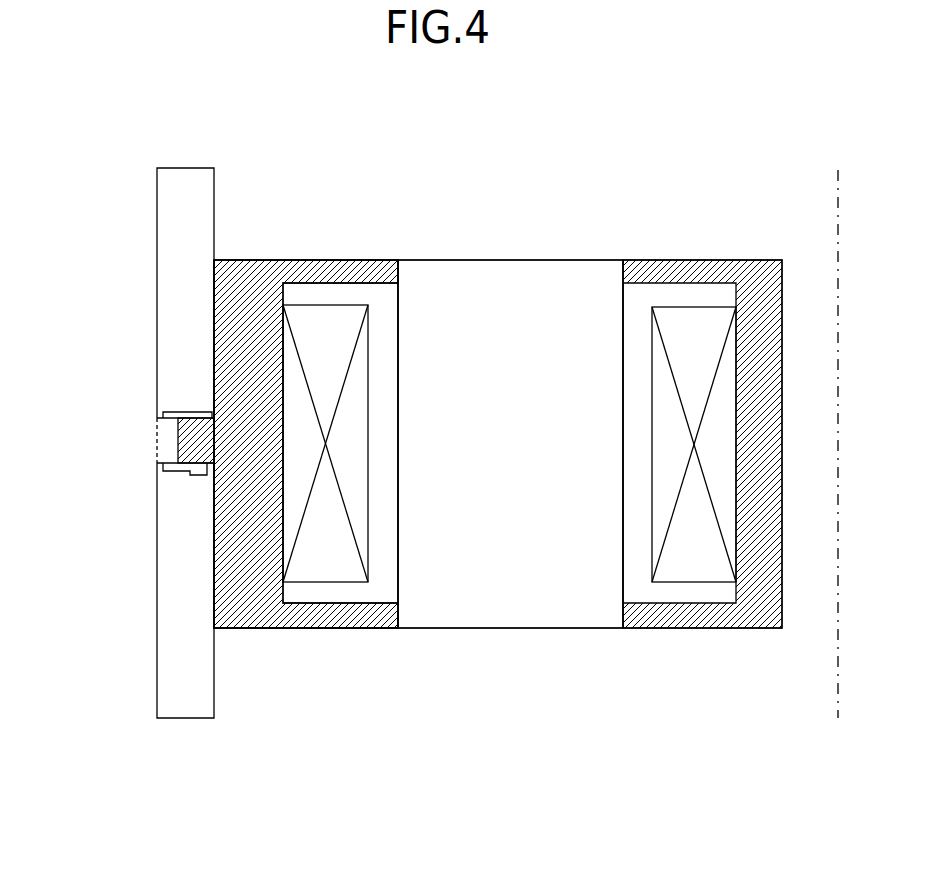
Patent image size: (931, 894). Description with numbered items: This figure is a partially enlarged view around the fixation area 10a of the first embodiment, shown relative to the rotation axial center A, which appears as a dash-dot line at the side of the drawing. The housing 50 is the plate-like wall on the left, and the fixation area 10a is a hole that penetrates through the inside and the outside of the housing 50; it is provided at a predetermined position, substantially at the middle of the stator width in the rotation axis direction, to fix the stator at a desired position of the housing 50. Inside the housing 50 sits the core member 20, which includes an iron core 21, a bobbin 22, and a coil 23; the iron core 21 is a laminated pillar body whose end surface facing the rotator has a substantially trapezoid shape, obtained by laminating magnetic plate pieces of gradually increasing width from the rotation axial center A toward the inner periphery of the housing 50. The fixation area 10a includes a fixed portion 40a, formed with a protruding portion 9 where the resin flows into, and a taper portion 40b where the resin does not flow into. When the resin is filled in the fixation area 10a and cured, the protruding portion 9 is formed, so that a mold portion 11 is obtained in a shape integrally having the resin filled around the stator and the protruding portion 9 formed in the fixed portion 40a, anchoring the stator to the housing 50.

The protruding portion 9 is at (200, 448).
The fixation area 10a is at (187, 472).
The mold portion 11 is at (260, 270).
The core member 20 is at (759, 165).
The iron core 21 is at (490, 272).
The bobbin 22 is at (663, 293).
The coil 23 is at (325, 318).
The fixed portion 40a is at (197, 408).
The taper portion 40b is at (175, 410).
The housing 50 is at (157, 230).
The rotation axial center A is at (836, 427).